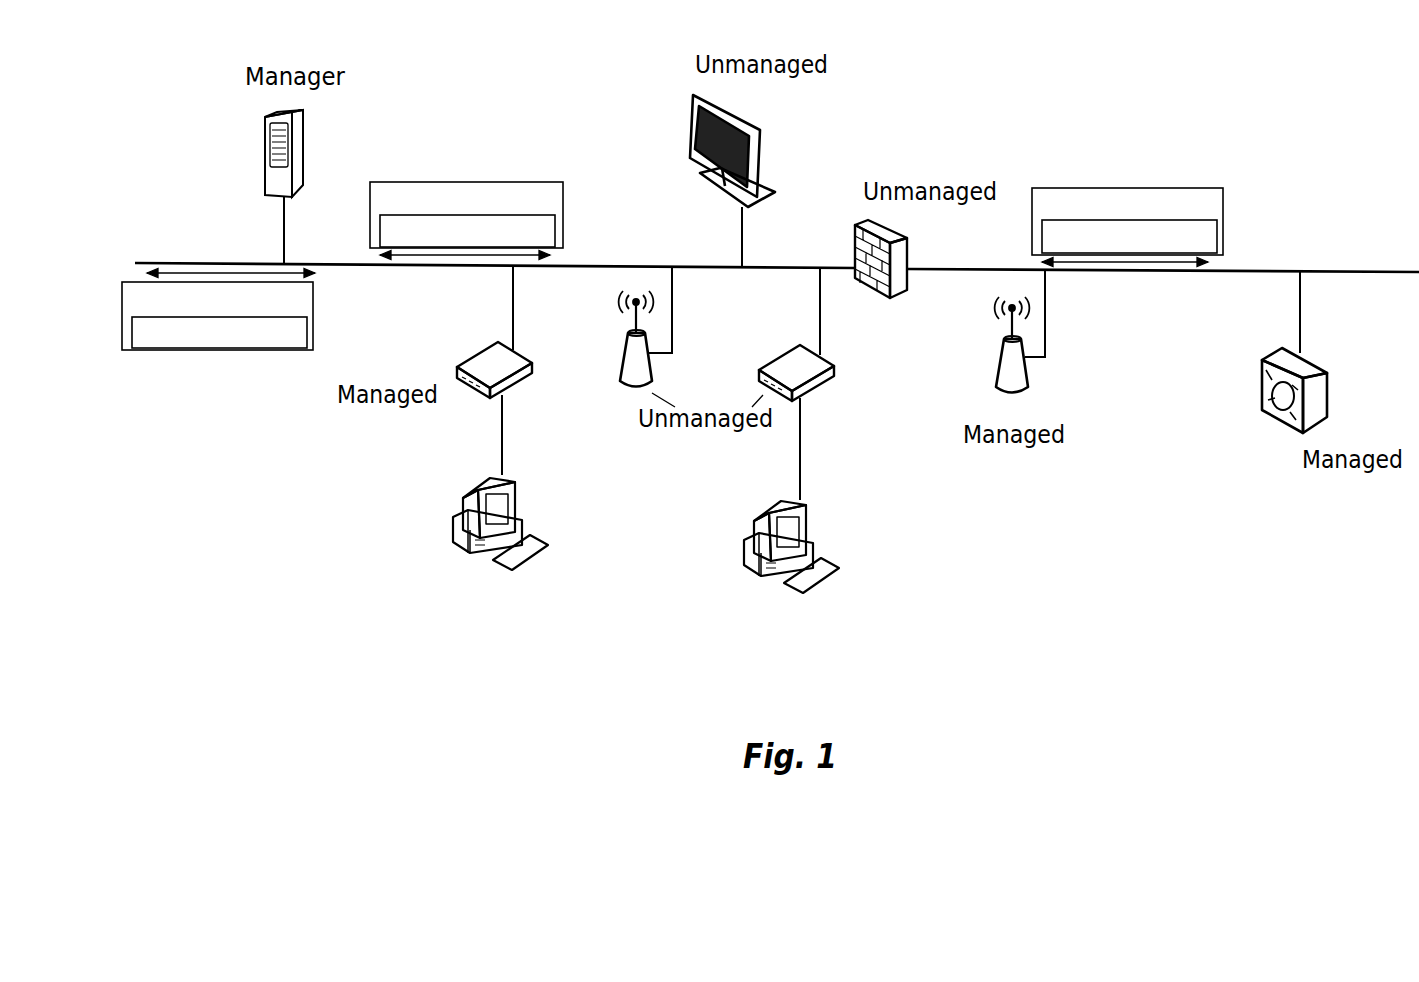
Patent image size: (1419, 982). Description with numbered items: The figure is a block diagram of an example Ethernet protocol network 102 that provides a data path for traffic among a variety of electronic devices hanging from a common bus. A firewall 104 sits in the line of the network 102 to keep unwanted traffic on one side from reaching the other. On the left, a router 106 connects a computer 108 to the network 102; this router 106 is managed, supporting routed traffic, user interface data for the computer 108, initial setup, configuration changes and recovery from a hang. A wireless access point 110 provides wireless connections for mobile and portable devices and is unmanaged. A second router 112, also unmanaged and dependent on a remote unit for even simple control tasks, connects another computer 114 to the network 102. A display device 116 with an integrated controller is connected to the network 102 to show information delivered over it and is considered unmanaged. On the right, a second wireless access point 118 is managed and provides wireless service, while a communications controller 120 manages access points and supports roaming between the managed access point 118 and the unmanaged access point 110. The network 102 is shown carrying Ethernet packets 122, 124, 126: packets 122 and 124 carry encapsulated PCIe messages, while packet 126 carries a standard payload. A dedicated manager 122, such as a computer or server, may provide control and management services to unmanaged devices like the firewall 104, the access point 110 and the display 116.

The network 102 is at (1403, 268).
The firewall 104 is at (908, 250).
The router 106 is at (477, 348).
The computer 108 is at (460, 517).
The wireless access point 110 is at (628, 343).
The second router 112 is at (787, 348).
The computer 114 is at (748, 537).
The display device 116 is at (687, 112).
The second wireless access point 118 is at (1007, 343).
The communications controller 120 is at (1278, 347).
The Ethernet packet with encapsulated PCIe message 122 is at (303, 178).
The Ethernet packet with encapsulated PCIe message 124 is at (260, 350).
The Ethernet packet with standard payload 126 is at (540, 183).